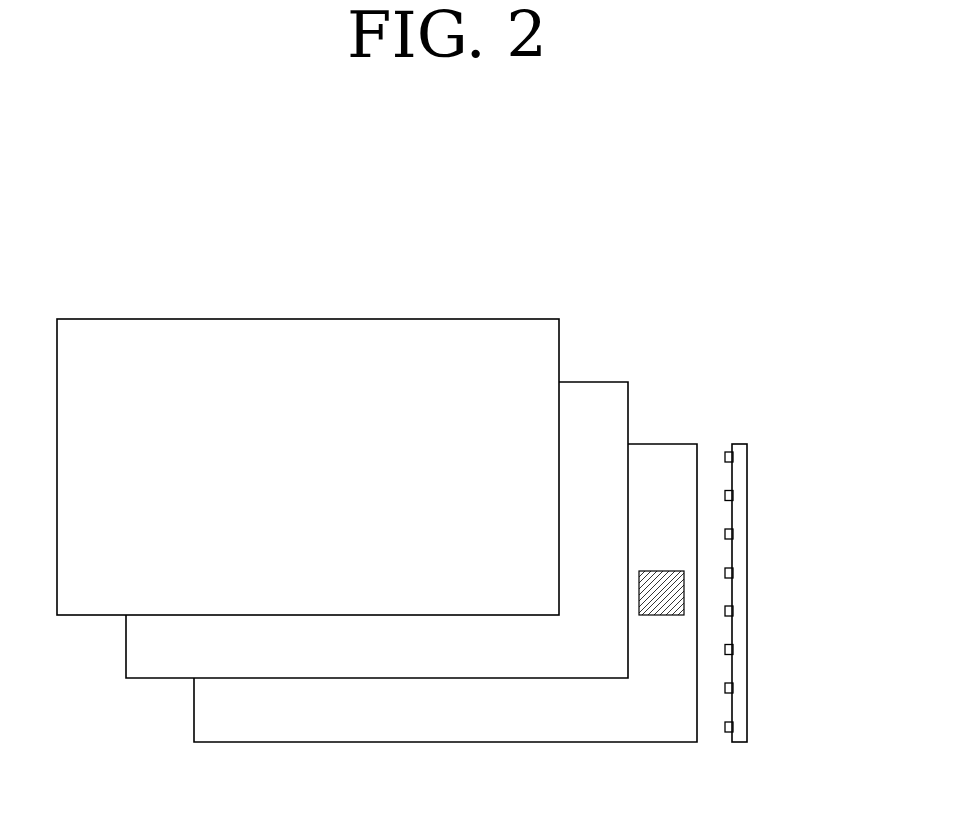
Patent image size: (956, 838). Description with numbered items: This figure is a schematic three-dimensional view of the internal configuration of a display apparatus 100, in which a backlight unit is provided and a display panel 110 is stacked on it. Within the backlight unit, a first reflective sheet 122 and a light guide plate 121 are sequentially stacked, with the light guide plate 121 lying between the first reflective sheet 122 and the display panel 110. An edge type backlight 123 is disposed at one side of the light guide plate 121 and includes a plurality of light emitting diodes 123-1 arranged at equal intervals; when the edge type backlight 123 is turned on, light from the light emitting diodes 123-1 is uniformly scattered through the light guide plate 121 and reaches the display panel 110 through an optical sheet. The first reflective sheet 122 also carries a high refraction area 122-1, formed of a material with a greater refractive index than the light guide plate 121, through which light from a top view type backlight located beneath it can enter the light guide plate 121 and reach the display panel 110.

The display apparatus 100 is at (482, 182).
The display panel 110 is at (531, 319).
The light guide plate 121 is at (607, 382).
The first reflective sheet 122 is at (672, 444).
The high refraction area 122-1 is at (664, 615).
The edge type backlight 123 is at (740, 444).
The light emitting diodes 123-1 is at (734, 451).